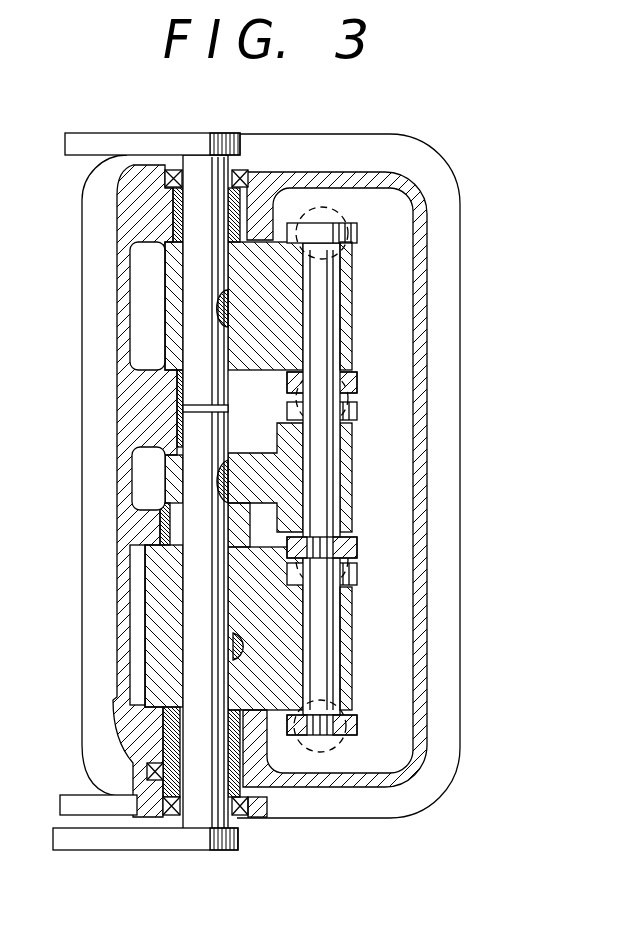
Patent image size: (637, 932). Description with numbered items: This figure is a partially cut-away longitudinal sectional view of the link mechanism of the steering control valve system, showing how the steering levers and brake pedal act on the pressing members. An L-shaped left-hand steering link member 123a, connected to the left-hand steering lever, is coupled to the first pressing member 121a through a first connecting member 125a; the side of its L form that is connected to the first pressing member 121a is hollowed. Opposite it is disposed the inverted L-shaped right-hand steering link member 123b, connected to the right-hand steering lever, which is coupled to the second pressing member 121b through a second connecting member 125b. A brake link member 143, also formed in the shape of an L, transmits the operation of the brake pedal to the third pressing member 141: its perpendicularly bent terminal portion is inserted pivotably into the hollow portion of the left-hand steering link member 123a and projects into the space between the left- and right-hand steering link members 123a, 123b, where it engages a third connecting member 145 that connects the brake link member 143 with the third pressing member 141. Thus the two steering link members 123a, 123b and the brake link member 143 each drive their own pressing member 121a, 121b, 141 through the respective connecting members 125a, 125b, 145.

The right-hand steering link member 123b is at (123, 139).
The left-hand steering link member 123a is at (80, 800).
The brake link member 143 is at (118, 843).
The second pressing member 121b is at (380, 222).
The first pressing member 121a is at (320, 737).
The second connecting member 125b is at (353, 302).
The first connecting member 125a is at (352, 646).
The third pressing member 141 is at (357, 543).
The third connecting member 145 is at (168, 478).